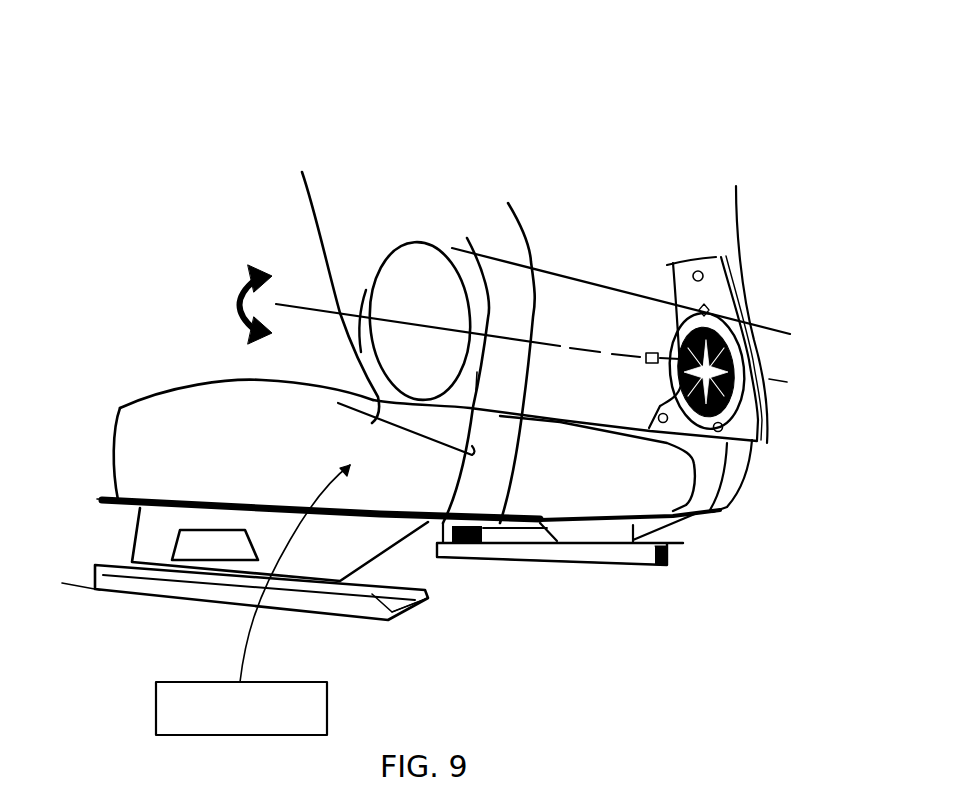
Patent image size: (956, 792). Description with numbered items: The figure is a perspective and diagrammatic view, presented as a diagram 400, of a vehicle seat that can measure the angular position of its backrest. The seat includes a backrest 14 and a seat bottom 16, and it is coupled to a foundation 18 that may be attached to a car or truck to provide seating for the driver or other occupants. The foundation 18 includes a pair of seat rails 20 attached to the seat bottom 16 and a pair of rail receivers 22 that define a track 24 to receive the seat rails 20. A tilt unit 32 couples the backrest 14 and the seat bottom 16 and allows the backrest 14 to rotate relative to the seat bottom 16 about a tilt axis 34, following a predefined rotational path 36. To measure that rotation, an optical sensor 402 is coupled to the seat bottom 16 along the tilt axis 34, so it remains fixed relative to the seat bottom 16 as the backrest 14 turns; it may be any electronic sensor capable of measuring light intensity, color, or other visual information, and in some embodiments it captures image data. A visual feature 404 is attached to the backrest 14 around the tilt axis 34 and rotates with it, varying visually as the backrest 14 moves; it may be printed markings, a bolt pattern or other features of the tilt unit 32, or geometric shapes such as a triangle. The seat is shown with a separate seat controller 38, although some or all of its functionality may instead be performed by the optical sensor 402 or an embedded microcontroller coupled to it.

The diagram 400 is at (817, 80).
The backrest 14 is at (340, 220).
The seat bottom 16 is at (164, 412).
The foundation 18 is at (586, 652).
The seat rails 20 is at (384, 537).
The rail receivers 22 is at (115, 582).
The track 24 is at (380, 632).
The tilt unit 32 is at (790, 300).
The tilt axis 34 is at (311, 306).
The predefined rotational path 36 is at (236, 305).
The seat controller 38 is at (290, 682).
The optical sensor 402 is at (650, 352).
The visual feature 404 is at (746, 363).